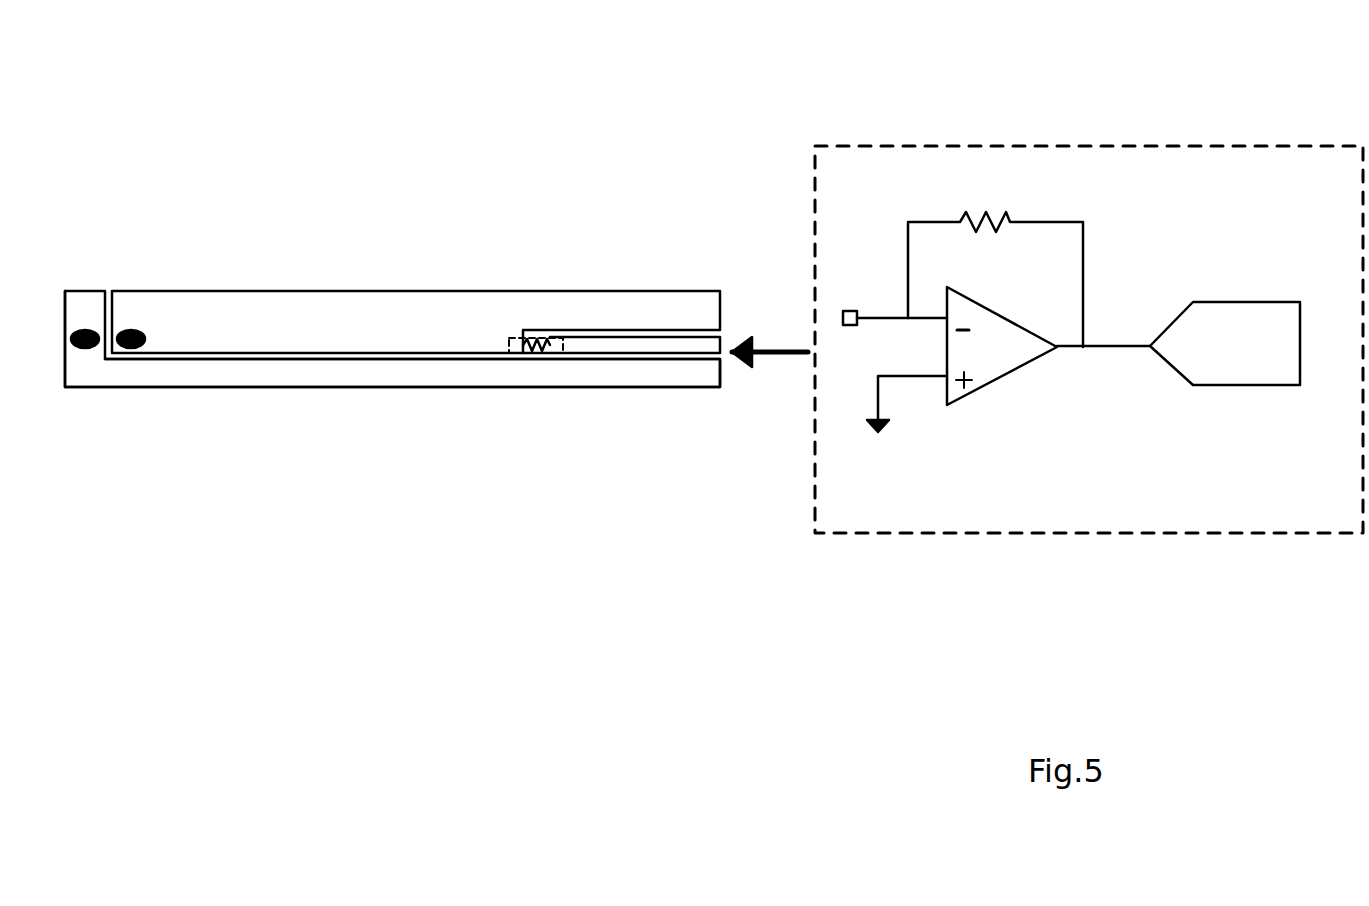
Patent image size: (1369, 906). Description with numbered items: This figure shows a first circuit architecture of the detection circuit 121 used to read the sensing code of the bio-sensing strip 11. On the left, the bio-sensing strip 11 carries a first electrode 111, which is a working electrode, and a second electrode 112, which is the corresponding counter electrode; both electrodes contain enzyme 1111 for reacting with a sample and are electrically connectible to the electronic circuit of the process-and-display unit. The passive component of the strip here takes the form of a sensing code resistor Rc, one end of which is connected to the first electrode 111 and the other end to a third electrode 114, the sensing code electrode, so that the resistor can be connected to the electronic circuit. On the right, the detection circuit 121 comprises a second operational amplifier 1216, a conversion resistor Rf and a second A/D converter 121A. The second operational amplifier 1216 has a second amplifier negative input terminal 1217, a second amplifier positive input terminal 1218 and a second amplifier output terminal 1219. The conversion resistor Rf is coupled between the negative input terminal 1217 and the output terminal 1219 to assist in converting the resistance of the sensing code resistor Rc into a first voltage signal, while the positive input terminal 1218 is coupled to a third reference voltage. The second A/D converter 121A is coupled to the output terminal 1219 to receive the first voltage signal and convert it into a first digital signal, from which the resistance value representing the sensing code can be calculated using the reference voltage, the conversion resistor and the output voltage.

The bio-sensing strip 11 is at (467, 283).
The first electrode 111 is at (238, 300).
The second electrode 112 is at (300, 374).
The third electrode 114 is at (680, 347).
The enzyme 1111 is at (128, 347).
The sensing code resistor Rc is at (540, 350).
The detection circuit 121 is at (1188, 137).
The conversion resistor Rf is at (995, 265).
The second operational amplifier 1216 is at (1005, 373).
The second amplifier negative input terminal 1217 is at (935, 316).
The second amplifier positive input terminal 1218 is at (917, 376).
The second amplifier output terminal 1219 is at (1067, 348).
The second A/D converter 121A is at (1253, 305).